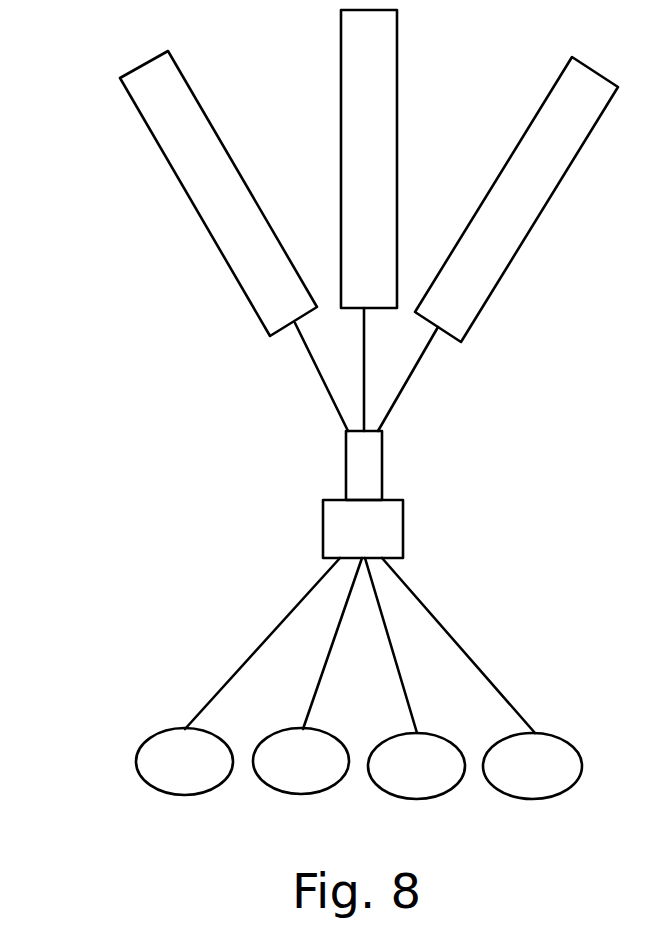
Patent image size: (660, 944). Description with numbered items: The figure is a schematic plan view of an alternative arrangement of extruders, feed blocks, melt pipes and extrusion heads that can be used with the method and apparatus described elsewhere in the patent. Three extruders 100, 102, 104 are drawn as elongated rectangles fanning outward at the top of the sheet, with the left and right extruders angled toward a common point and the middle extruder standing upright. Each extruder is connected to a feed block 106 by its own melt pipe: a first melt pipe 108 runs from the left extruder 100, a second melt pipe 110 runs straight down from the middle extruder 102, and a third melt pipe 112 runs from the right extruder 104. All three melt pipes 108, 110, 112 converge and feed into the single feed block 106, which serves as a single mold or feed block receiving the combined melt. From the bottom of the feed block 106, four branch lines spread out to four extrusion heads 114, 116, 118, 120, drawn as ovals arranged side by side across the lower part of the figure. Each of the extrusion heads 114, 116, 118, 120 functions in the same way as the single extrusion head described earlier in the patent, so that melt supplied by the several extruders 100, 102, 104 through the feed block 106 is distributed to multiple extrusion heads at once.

The extruder 100 is at (172, 170).
The extruder 102 is at (342, 84).
The extruder 104 is at (541, 104).
The feed block 106 is at (383, 463).
The melt pipe 108 is at (330, 388).
The melt pipe 110 is at (364, 330).
The melt pipe 112 is at (418, 365).
The extrusion head 114 is at (185, 797).
The extrusion head 116 is at (302, 796).
The extrusion head 118 is at (417, 801).
The extrusion head 120 is at (532, 801).